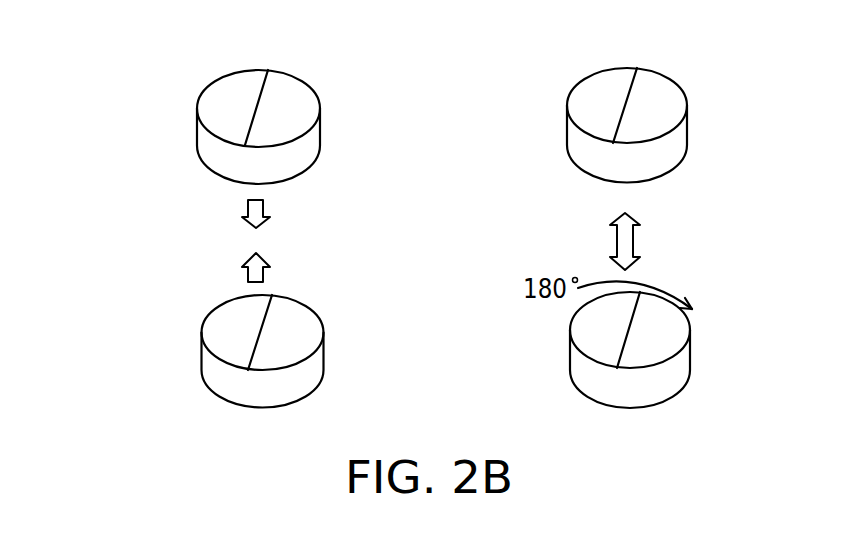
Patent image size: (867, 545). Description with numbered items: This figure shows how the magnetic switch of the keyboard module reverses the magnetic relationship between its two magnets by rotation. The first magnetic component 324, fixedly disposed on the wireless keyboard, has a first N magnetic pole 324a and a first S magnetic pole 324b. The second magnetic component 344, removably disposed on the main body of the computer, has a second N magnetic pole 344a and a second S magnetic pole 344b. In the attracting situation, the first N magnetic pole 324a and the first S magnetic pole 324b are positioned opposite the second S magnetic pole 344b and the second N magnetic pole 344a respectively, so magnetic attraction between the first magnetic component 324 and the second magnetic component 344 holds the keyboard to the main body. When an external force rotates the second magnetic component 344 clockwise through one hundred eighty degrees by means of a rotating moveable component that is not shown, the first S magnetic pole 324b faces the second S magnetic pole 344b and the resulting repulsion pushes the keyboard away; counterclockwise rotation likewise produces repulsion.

The first magnetic component 324 is at (760, 125).
The first N magnetic pole 324a is at (200, 94).
The first S magnetic pole 324b is at (313, 90).
The second magnetic component 344 is at (775, 367).
The second N magnetic pole 344a is at (318, 317).
The second S magnetic pole 344b is at (207, 318).